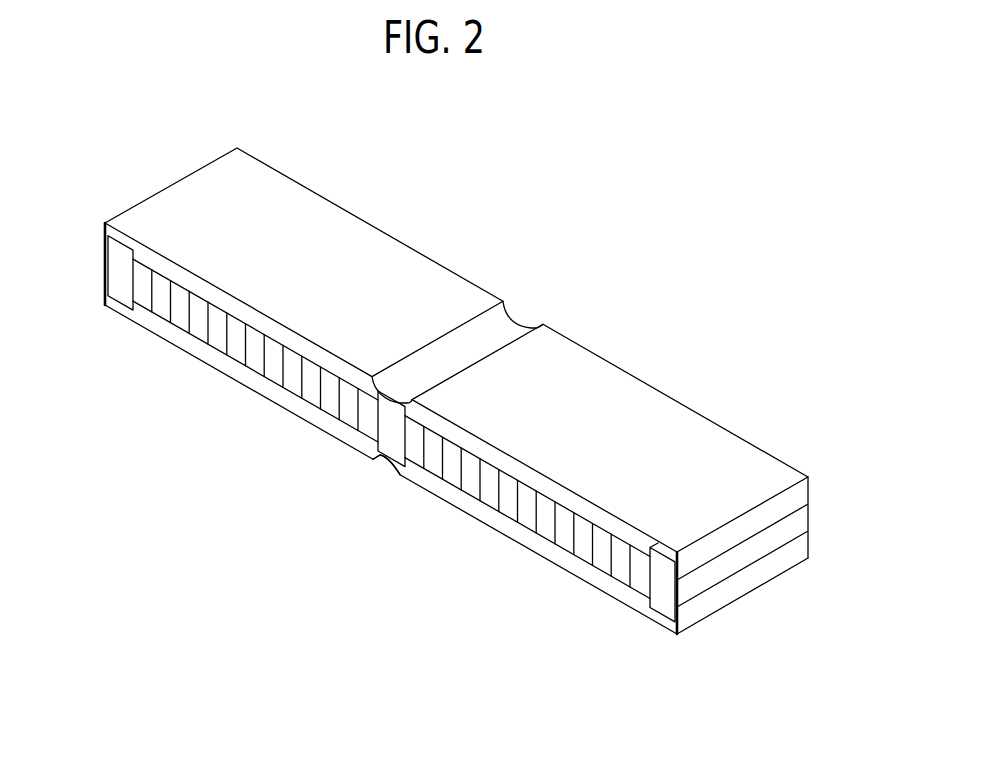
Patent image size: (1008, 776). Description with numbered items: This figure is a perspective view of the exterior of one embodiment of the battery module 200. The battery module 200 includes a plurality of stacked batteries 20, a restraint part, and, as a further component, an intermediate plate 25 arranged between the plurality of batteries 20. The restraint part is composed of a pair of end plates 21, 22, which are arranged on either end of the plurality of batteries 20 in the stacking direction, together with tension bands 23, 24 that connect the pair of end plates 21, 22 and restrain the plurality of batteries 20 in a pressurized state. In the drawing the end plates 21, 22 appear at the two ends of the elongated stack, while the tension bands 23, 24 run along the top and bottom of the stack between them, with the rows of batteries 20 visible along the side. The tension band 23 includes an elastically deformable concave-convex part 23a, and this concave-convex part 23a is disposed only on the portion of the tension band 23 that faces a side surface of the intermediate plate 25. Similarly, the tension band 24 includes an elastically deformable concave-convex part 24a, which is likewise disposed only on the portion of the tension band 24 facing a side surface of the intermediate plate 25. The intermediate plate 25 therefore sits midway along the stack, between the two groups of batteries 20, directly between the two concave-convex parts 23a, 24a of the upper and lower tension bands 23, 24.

The battery module 200 is at (207, 126).
The batteries 20 is at (203, 318).
The end plate 21 is at (120, 258).
The end plate 22 is at (663, 572).
The tension band 23 is at (355, 248).
The concave-convex part 23a is at (508, 330).
The tension band 24 is at (298, 418).
The concave-convex part 24a is at (395, 468).
The intermediate plate 25 is at (392, 428).